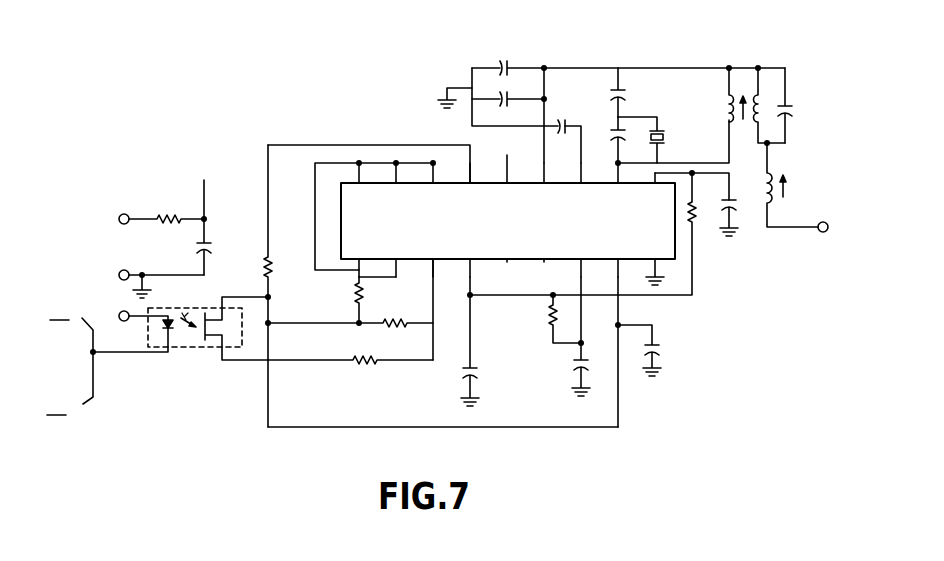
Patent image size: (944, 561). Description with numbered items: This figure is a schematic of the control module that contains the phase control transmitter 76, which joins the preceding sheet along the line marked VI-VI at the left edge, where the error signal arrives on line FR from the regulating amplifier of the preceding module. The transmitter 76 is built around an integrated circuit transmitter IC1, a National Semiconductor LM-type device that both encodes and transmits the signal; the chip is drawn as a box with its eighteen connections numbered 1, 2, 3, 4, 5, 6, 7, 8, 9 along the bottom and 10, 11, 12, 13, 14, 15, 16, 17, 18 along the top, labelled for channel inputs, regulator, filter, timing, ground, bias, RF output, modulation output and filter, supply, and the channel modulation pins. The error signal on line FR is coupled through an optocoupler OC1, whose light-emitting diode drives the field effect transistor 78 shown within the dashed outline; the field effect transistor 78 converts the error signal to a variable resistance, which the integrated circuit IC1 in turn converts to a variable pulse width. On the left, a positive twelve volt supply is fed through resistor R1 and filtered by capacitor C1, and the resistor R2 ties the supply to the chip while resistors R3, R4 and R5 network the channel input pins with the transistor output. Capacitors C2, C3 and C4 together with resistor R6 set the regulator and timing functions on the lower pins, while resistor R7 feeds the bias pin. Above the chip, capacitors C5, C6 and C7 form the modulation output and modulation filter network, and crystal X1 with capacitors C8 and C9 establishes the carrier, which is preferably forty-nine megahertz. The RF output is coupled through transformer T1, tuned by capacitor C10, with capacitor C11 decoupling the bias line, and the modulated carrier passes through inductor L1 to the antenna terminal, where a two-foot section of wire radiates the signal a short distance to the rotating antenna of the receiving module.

The transmitter 76 is at (435, 43).
The field effect transistor 78 is at (212, 342).
The IC1 pin 1 (CH3) 1 is at (365, 270).
The IC1 pin 2 (CH2) 2 is at (402, 270).
The IC1 pin 3 (CH1) 3 is at (439, 270).
The IC1 pin 4 (REG) 4 is at (476, 270).
The IC1 pin 5 is at (513, 270).
The IC1 pin 6 is at (550, 270).
The IC1 pin 7 (FT) 7 is at (587, 270).
The IC1 pin 8 (PT) 8 is at (624, 270).
The IC1 pin 9 (GND) 9 is at (656, 272).
The IC1 pin 10 (BIAS) 10 is at (656, 175).
The IC1 pin 11 (RF OUT) 11 is at (629, 174).
The IC1 pin 12 (MOD FILTER) 12 is at (592, 174).
The IC1 pin 13 (MOD OUT) 13 is at (554, 174).
The IC1 pin 14 (Vcc) 14 is at (517, 170).
The IC1 pin 15 (RM) 15 is at (480, 174).
The IC1 pin 16 (CM6) 16 is at (443, 174).
The IC1 pin 17 (CM5) 17 is at (406, 174).
The IC1 pin 18 (CM4) 18 is at (369, 174).
The resistor R1 is at (166, 205).
The resistor R2 is at (283, 286).
The resistor R3 is at (374, 299).
The resistor R4 is at (350, 348).
The resistor R5 is at (350, 312).
The resistor R6 is at (554, 319).
The resistor R7 is at (596, 234).
The capacitor C1 is at (218, 227).
The capacitor C2 is at (482, 341).
The capacitor C3 is at (592, 336).
The capacitor C4 is at (651, 350).
The capacitor C5 is at (628, 60).
The capacitor C6 is at (508, 93).
The capacitor C7 is at (563, 115).
The capacitor C8 is at (632, 92).
The capacitor C9 is at (607, 140).
The capacitor C10 is at (804, 105).
The capacitor C11 is at (745, 214).
The crystal X1 is at (656, 140).
The transformer T1 is at (756, 104).
The inductor L1 is at (792, 185).
The optocoupler OC1 is at (208, 349).
The integrated circuit IC1, LM1871 IC1 is at (508, 221).